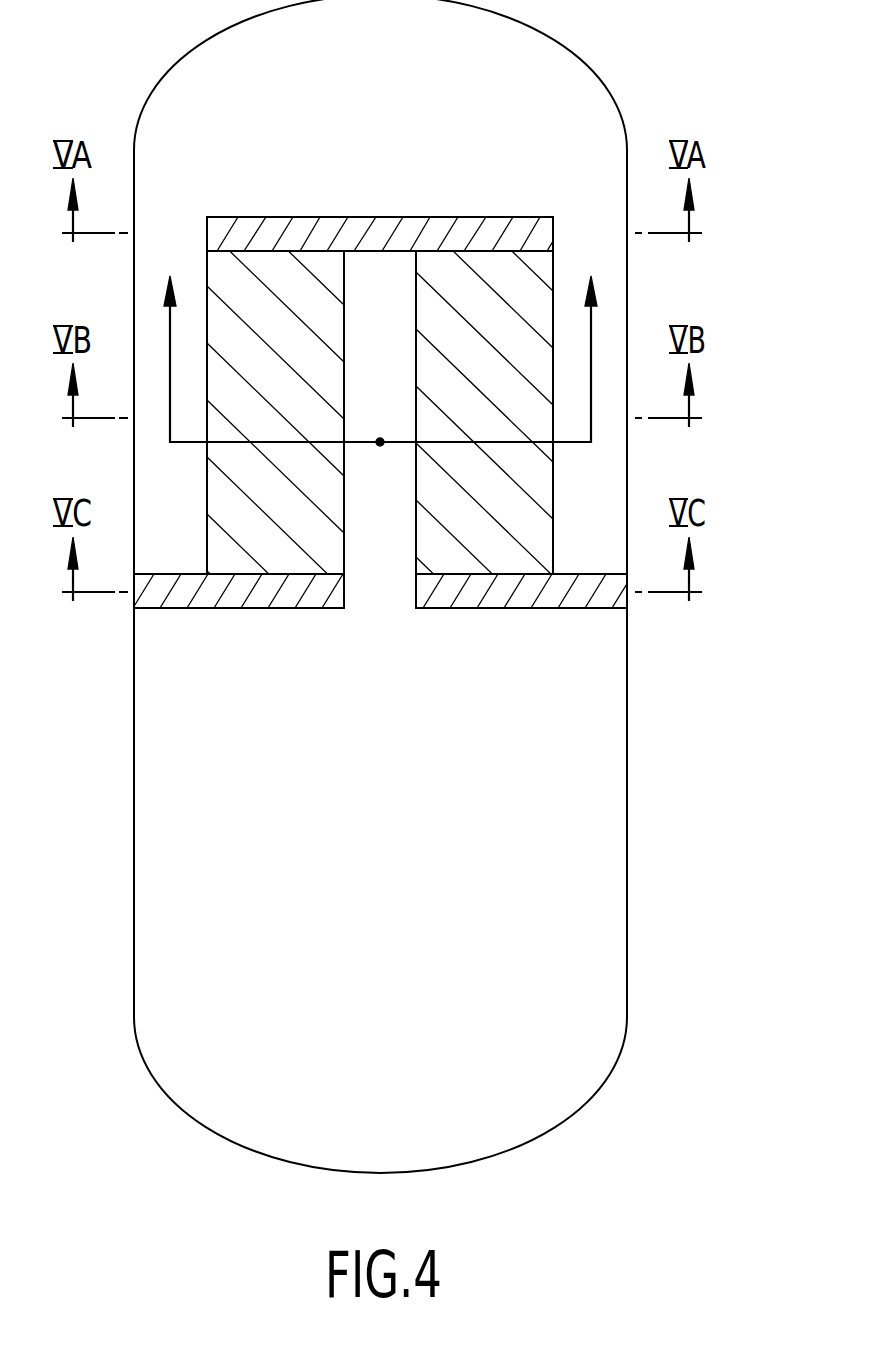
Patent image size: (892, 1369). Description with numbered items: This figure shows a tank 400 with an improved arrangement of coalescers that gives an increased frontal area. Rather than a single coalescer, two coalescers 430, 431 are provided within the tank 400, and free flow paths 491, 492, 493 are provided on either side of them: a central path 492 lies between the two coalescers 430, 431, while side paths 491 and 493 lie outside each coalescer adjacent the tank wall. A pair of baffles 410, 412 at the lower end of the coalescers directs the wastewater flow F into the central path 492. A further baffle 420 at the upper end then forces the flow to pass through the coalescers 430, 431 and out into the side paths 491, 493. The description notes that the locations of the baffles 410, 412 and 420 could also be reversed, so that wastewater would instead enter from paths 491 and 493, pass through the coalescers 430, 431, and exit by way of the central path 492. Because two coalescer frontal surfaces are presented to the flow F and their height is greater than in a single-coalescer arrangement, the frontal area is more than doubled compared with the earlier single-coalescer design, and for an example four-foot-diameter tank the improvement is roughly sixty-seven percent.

The tank 400 is at (627, 157).
The baffle 420 is at (346, 232).
The coalescer 430 is at (320, 317).
The coalescer 431 is at (455, 352).
The baffle 410 is at (199, 597).
The baffle 412 is at (585, 597).
The free flow path 491 is at (193, 533).
The central path 492 is at (403, 419).
The free flow path 493 is at (613, 542).
The wastewater flow F is at (380, 442).